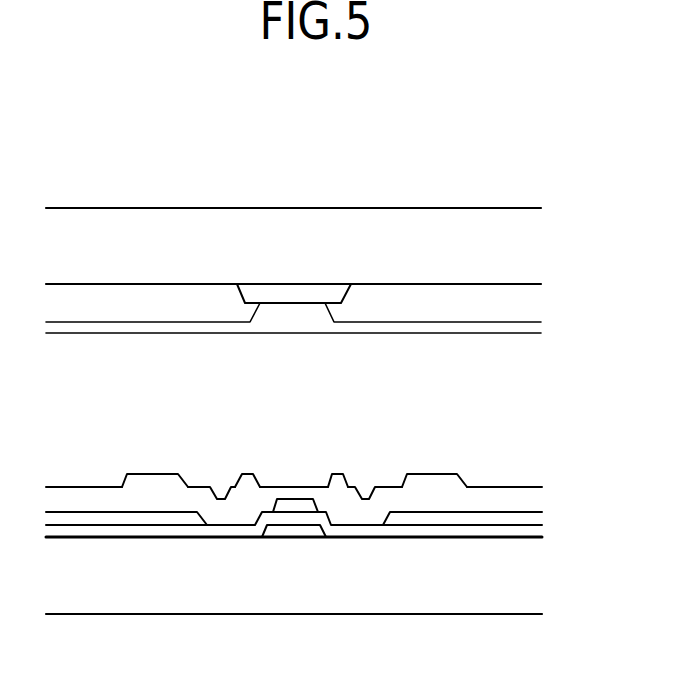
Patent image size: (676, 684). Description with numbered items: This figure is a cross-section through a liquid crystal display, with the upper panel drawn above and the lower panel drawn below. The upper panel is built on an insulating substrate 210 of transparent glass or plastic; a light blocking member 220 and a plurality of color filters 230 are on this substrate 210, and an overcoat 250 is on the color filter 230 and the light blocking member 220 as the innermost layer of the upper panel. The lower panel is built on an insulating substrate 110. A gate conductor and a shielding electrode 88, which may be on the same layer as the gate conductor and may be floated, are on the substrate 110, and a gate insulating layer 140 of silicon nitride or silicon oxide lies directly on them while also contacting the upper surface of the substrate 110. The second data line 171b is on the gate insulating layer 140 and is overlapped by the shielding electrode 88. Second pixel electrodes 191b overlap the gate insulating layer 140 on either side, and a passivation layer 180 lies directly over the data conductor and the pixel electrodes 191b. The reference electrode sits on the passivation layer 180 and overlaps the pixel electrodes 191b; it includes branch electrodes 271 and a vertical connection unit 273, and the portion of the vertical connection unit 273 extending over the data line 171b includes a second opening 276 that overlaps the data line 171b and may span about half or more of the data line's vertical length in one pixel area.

The insulating substrate 110 is at (87, 588).
The gate insulating layer 140 is at (503, 533).
The shielding electrode 88 is at (288, 532).
The second data line 171b is at (300, 505).
The second pixel electrode 191b is at (143, 517).
The passivation layer 180 is at (225, 513).
The branch electrode 271 is at (153, 482).
The vertical connection unit 273 is at (249, 480).
The second opening 276 is at (263, 482).
The insulating substrate 210 is at (208, 238).
The light blocking member 220 is at (295, 295).
The color filter 230 is at (127, 300).
The overcoat 250 is at (407, 328).